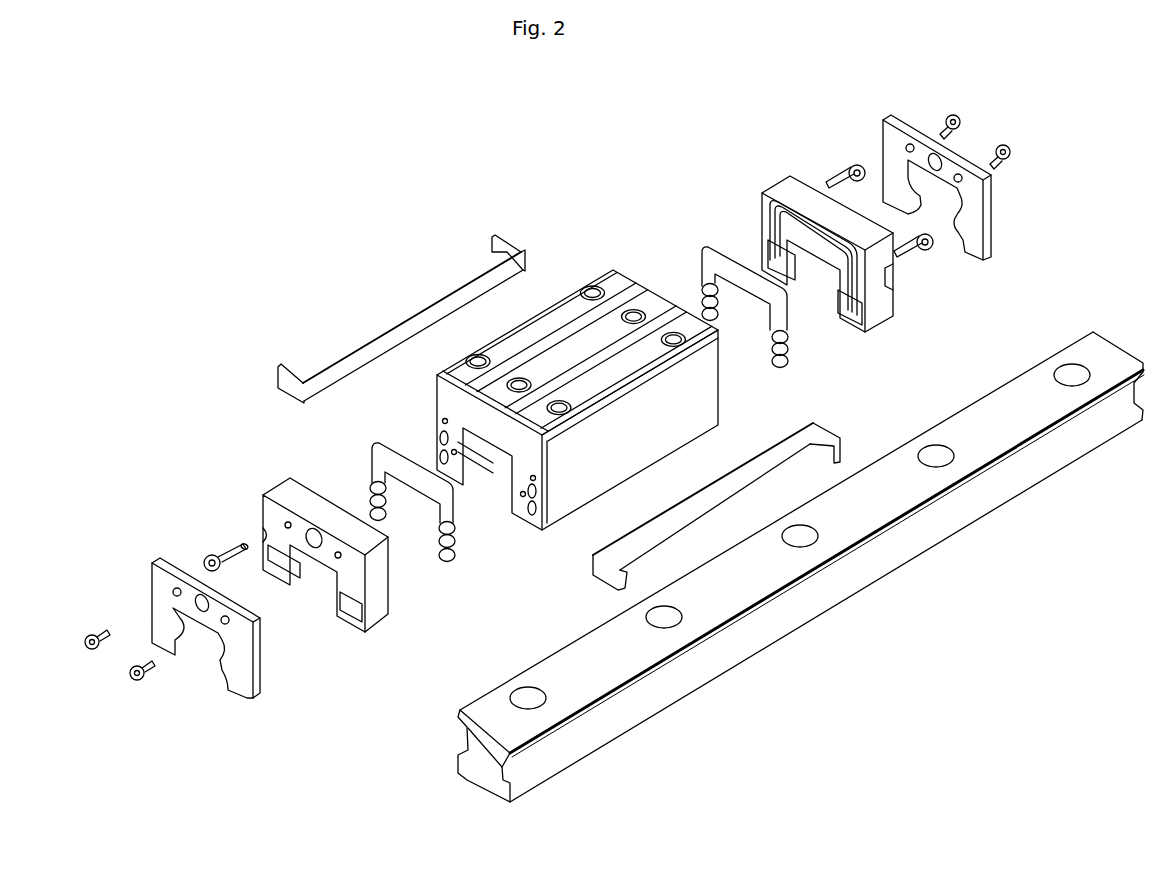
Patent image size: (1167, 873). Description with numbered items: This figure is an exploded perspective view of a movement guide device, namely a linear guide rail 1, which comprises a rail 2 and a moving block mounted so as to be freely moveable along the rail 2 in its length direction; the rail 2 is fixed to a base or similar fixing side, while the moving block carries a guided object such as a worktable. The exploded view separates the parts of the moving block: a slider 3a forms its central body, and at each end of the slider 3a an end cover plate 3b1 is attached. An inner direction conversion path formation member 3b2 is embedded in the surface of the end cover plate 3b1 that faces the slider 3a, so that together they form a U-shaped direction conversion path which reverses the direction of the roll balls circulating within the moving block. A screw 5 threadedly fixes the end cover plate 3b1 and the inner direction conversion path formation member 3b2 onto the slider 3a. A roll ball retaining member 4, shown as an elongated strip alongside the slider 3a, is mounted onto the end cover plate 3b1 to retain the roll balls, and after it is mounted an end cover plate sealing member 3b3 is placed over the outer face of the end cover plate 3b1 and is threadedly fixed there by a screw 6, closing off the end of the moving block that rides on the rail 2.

The linear guide rail 1 is at (435, 231).
The rail 2 is at (468, 780).
The slider 3a is at (616, 287).
The end cover plate 3b1 is at (273, 520).
The inner direction conversion path formation member 3b2 is at (398, 466).
The end cover plate sealing member 3b3 is at (162, 620).
The roll ball retaining member 4 is at (393, 340).
The screw 5 is at (217, 533).
The screw 6 is at (127, 677).